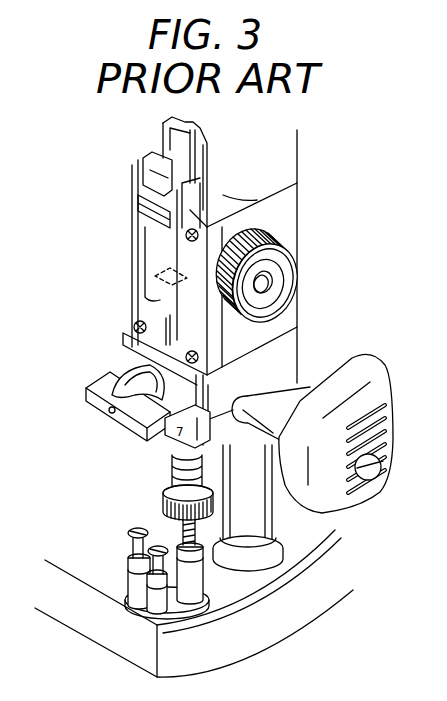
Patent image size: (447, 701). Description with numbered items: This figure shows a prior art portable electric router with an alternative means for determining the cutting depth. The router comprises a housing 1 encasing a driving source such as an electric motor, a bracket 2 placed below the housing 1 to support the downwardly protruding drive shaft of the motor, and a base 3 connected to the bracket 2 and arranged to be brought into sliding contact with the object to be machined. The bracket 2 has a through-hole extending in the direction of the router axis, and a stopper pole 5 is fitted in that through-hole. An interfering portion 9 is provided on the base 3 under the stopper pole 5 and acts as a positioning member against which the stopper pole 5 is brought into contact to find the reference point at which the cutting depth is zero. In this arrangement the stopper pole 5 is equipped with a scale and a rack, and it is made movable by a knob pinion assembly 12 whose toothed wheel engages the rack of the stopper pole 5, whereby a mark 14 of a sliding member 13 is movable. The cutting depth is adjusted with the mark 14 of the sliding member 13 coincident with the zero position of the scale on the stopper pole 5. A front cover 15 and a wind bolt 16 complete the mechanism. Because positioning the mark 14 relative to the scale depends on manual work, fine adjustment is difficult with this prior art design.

The housing 1 is at (297, 150).
The bracket 2 is at (287, 367).
The base 3 is at (100, 625).
The stopper pole 5 is at (197, 126).
The interfering portion 9 is at (203, 605).
The knob pinion assembly 12 is at (270, 230).
The sliding member 13 is at (152, 235).
The mark 14 is at (155, 278).
The front cover 15 is at (135, 262).
The wind bolt 16 is at (88, 381).